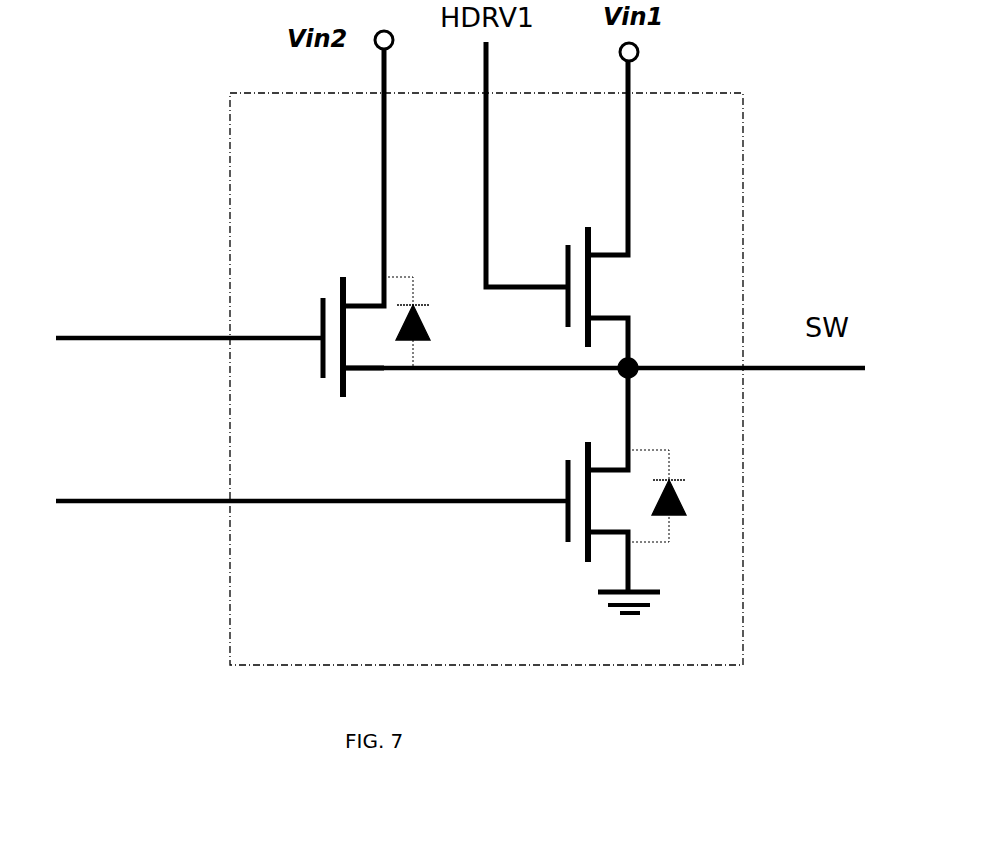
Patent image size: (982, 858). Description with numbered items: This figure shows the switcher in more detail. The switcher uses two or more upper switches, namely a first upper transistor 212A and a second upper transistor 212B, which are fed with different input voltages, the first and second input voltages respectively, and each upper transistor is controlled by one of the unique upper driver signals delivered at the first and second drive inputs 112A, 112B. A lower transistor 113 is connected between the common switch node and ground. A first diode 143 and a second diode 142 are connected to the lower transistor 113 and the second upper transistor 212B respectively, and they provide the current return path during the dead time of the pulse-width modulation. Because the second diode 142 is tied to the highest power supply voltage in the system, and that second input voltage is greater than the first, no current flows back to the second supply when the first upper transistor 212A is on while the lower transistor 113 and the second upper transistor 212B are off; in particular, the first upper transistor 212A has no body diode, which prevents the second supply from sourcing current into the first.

The upper transistor Q2 212B is at (311, 223).
The second high-side drive signal HDRV2 input 112B is at (180, 314).
The diode D2 142 is at (466, 322).
The upper transistor Q1 212A is at (615, 205).
The low-side drive signal HDV1 input 112A is at (312, 478).
The transistor Q3 113 is at (566, 490).
The diode D1 143 is at (681, 483).